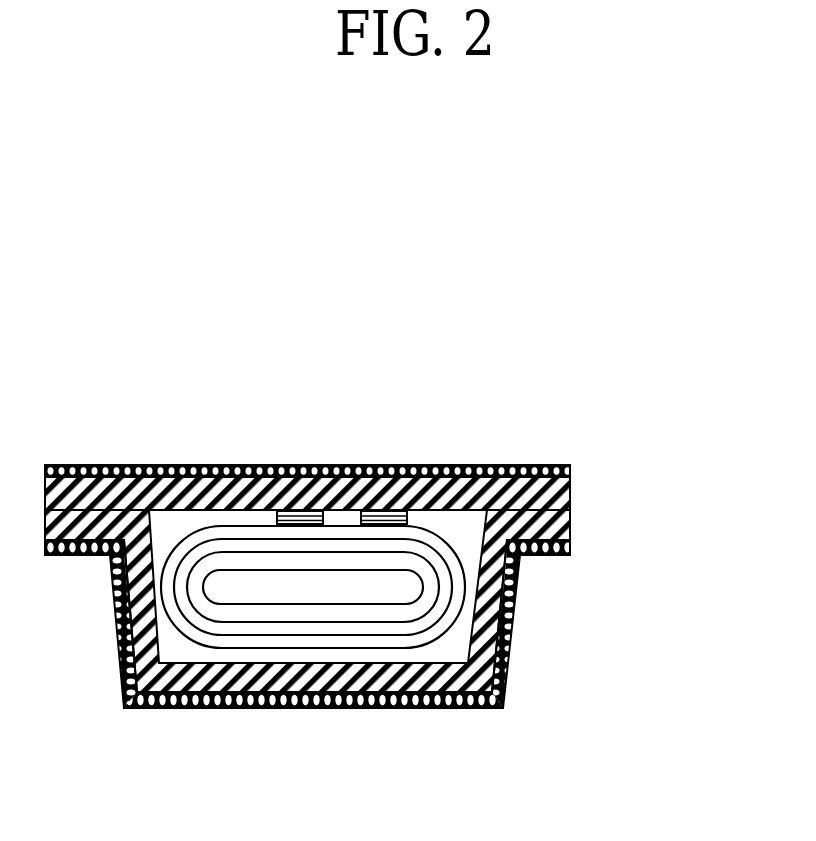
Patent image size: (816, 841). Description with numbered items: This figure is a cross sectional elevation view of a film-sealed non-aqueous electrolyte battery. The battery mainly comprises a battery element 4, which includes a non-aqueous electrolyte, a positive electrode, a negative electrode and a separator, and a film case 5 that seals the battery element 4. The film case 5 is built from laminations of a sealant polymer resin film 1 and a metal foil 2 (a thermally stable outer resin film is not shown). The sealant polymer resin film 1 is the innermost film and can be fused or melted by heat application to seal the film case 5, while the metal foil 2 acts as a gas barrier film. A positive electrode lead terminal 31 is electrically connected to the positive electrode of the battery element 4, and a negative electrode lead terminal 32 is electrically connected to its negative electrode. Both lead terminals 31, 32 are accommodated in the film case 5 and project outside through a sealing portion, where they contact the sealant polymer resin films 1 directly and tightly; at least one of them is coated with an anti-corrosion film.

The sealant polymer resin film 1 is at (572, 496).
The metal foil 2 is at (572, 470).
The battery element 4 is at (360, 632).
The film case 5 is at (395, 555).
The positive electrode lead terminal 31 is at (370, 510).
The negative electrode lead terminal 32 is at (283, 510).